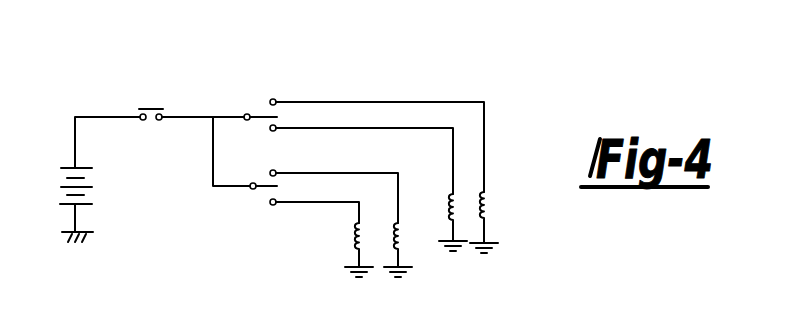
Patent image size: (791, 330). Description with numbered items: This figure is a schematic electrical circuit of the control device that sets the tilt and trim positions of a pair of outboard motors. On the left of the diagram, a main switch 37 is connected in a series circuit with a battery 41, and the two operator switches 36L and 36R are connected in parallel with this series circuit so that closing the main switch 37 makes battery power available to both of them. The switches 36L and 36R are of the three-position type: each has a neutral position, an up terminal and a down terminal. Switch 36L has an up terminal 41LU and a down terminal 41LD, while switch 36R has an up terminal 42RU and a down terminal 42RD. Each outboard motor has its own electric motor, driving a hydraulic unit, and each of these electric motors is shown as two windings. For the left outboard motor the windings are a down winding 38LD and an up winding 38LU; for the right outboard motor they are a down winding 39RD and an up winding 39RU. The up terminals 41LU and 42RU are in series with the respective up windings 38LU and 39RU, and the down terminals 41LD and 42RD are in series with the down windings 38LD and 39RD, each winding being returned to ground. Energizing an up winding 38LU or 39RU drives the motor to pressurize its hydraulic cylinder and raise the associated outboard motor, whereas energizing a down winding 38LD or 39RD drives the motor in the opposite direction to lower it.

The main switch 37 is at (151, 108).
The battery 41 is at (80, 205).
The switch 36L is at (260, 112).
The switch 36R is at (250, 192).
The up terminal 41LU is at (276, 100).
The down terminal 41LD is at (276, 131).
The up terminal 42RU is at (277, 171).
The down terminal 42RD is at (274, 205).
The down winding 38LD is at (450, 194).
The up winding 38LU is at (487, 192).
The down winding 39RD is at (357, 238).
The up winding 39RU is at (403, 240).